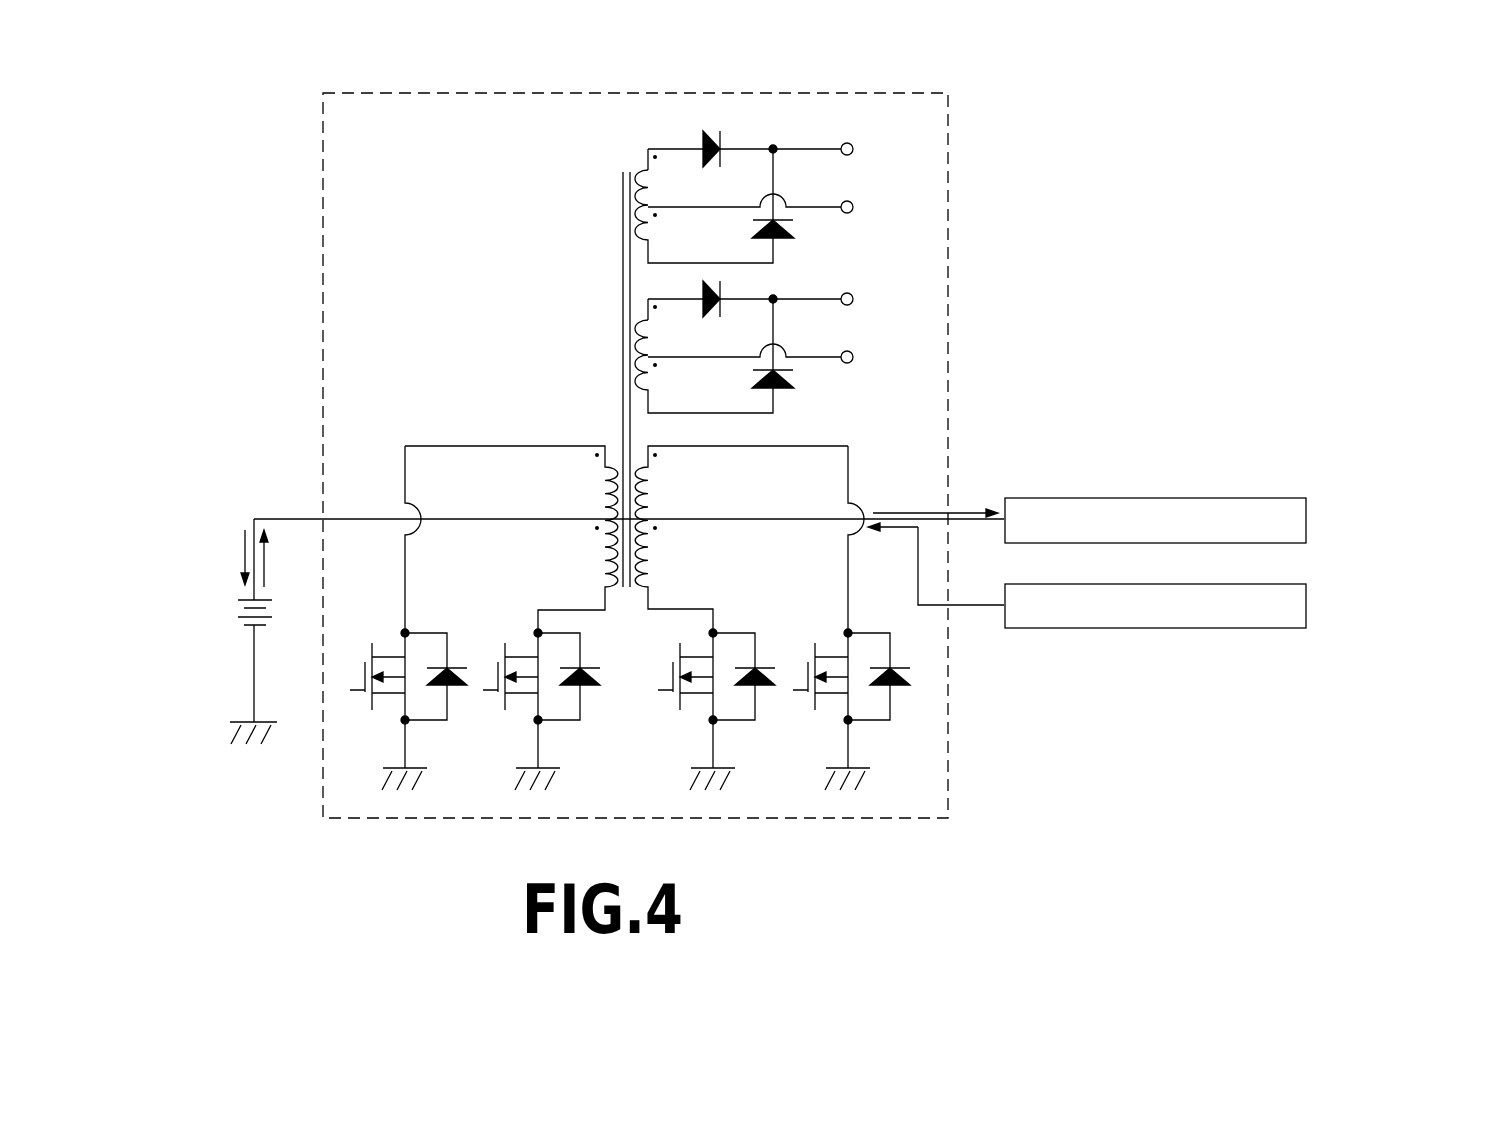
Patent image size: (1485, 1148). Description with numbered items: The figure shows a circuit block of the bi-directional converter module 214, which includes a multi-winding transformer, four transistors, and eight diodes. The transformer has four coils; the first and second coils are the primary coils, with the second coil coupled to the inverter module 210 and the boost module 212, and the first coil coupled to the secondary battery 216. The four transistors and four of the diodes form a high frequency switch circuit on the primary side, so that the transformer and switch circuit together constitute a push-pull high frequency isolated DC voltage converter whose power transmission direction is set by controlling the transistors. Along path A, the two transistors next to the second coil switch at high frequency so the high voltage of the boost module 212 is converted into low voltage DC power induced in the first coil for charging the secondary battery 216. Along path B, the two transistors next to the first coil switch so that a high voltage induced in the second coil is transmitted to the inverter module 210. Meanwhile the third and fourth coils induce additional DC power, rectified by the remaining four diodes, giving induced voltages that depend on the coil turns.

The bi-directional converter module 214 is at (323, 170).
The secondary battery 216 is at (238, 606).
The inverter module 210 is at (1306, 543).
The boost module 212 is at (1306, 628).